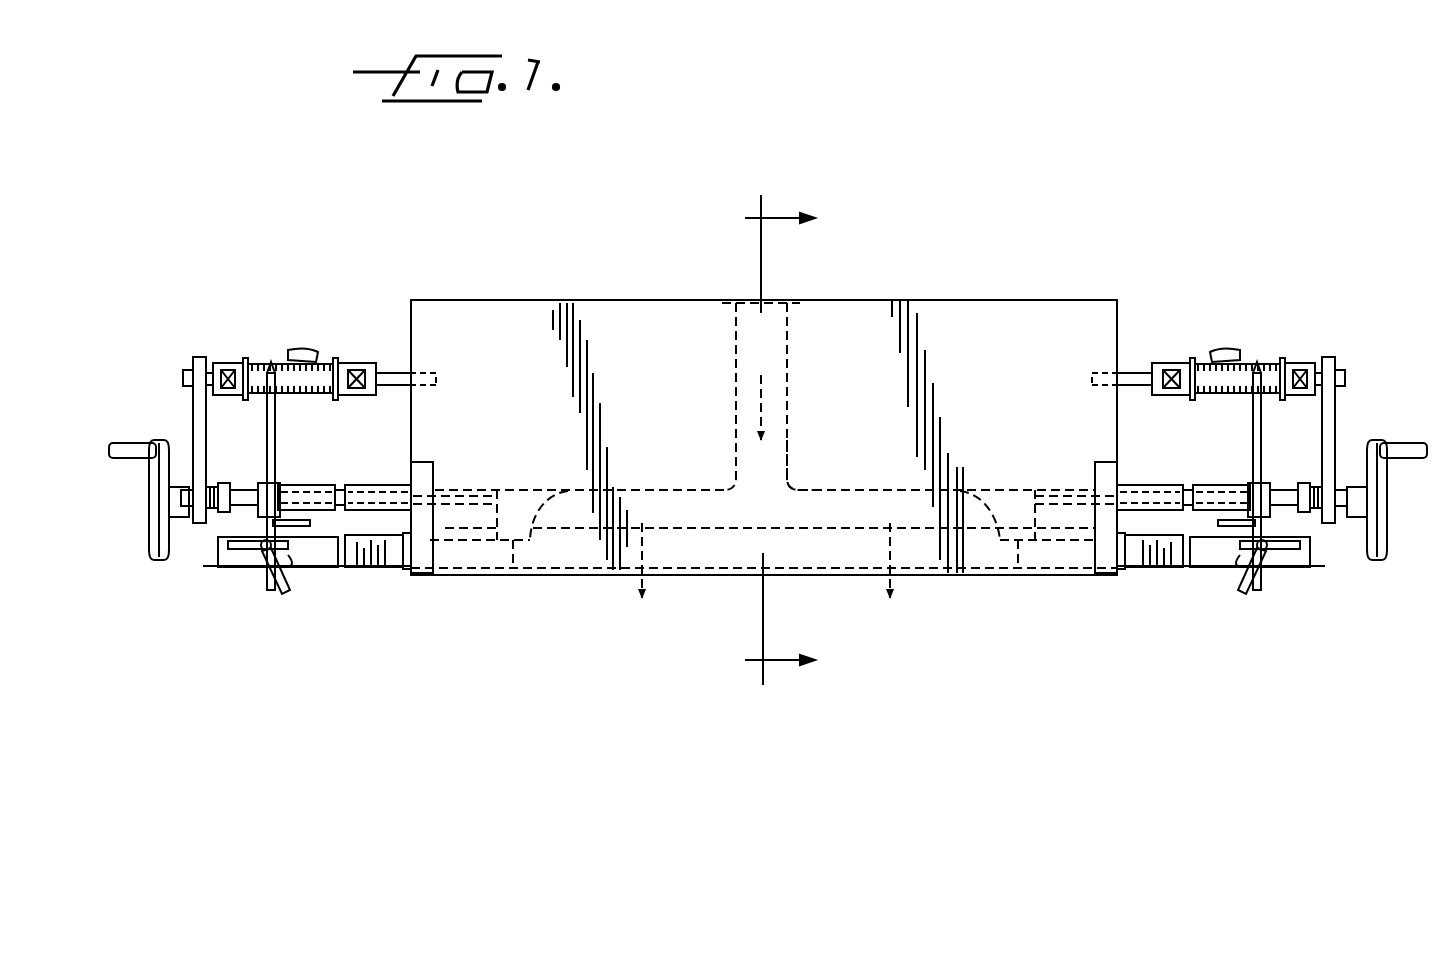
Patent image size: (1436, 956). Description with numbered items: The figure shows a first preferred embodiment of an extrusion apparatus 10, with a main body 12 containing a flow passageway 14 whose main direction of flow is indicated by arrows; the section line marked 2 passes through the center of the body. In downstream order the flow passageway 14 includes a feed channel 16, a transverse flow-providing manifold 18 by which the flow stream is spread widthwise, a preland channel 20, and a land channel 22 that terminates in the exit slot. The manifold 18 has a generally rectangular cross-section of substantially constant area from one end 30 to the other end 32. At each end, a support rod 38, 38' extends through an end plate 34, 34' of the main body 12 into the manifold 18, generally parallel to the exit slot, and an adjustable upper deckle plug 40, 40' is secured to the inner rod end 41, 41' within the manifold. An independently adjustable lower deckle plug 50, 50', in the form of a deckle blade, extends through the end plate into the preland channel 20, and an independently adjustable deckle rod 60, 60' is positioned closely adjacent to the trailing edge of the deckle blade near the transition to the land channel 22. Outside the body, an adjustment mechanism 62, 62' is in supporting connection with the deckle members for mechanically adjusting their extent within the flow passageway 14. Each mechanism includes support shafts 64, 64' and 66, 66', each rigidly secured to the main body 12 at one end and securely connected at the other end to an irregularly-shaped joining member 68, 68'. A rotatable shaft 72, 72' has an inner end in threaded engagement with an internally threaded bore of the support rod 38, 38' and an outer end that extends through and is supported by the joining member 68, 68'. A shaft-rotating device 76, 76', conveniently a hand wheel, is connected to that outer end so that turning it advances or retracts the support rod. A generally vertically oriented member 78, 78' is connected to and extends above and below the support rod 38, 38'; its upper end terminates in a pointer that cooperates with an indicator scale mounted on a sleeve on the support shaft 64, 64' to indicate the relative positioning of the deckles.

The section line 2- 2 is at (764, 440).
The extrusion apparatus 10 is at (456, 247).
The main body 12 is at (653, 300).
The flow passageway 14 is at (790, 355).
The feed channel 16 is at (790, 440).
The transverse flow-providing manifold 18 is at (688, 483).
The preland channel 20 is at (853, 500).
The land channel 22 is at (823, 575).
The manifold end 30 is at (1076, 523).
The manifold end 32 is at (445, 530).
The end plate 34 is at (1091, 494).
The end plate 34' is at (434, 493).
The support rod 38 is at (1150, 476).
The support rod 38' is at (350, 481).
The upper deckle plug 40 is at (985, 489).
The upper deckle plug 40' is at (547, 489).
The inner rod end 41 is at (1066, 463).
The inner rod end 41' is at (459, 473).
The lower deckle plug 50 is at (1221, 585).
The lower deckle plug 50' is at (307, 584).
The deckle rod 60 is at (1254, 587).
The deckle rod 60' is at (278, 586).
The adjustment mechanism 62 is at (1366, 439).
The adjustment mechanism 62' is at (162, 440).
The support shaft 64 is at (1207, 354).
The support shaft 64' is at (321, 359).
The support shaft 66 is at (1216, 476).
The support shaft 66' is at (334, 476).
The joining member 68 is at (1370, 438).
The joining member 68' is at (166, 438).
The rotatable shaft 72 is at (1296, 477).
The rotatable shaft 72' is at (232, 476).
The shaft-rotating device 76 is at (1387, 527).
The shaft-rotating device 76' is at (149, 531).
The vertically oriented member 78 is at (1231, 476).
The vertically oriented member 78' is at (298, 476).